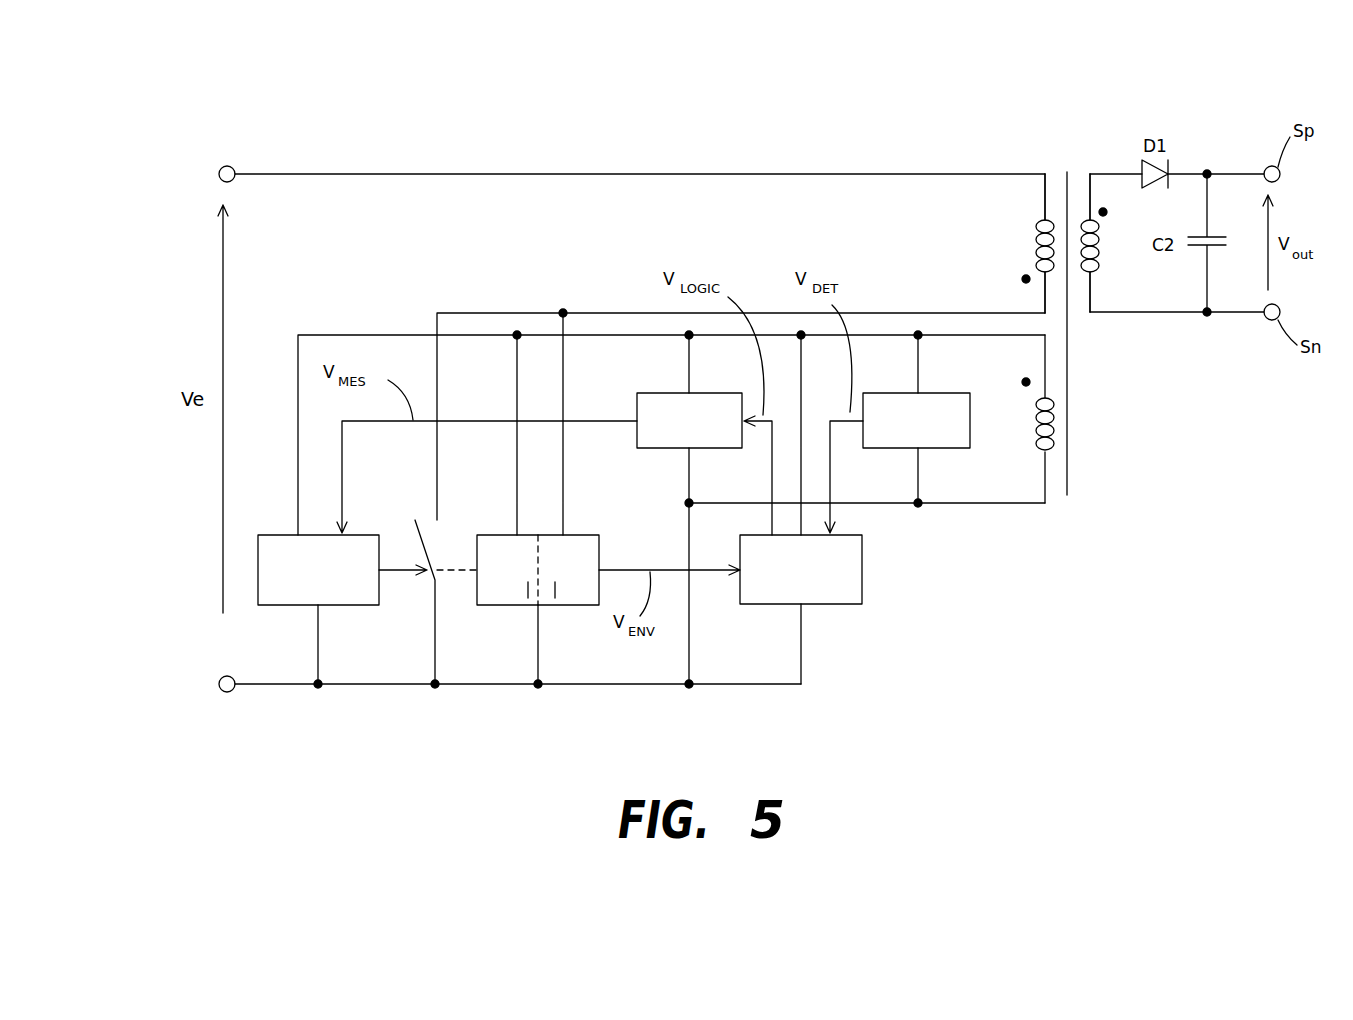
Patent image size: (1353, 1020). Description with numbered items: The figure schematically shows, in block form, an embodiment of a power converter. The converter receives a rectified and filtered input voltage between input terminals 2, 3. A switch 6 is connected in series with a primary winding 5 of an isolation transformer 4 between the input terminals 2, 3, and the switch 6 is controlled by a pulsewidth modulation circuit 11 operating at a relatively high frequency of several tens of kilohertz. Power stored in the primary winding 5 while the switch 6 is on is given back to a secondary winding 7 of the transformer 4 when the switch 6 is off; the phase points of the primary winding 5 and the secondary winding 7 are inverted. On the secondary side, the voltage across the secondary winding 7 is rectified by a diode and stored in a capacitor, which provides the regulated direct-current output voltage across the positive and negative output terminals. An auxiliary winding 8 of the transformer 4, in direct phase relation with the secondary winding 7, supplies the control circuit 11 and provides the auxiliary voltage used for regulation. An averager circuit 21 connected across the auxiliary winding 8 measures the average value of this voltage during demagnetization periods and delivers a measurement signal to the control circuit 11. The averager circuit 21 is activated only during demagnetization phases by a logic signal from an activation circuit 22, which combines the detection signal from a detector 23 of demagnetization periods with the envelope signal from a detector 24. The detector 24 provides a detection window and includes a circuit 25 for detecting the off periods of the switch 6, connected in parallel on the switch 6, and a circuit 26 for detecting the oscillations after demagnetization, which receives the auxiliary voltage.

The input terminal 2 is at (220, 167).
The input terminal 3 is at (220, 692).
The isolation transformer 4 is at (1064, 145).
The primary winding 5 is at (1035, 247).
The switch 6 is at (413, 528).
The secondary winding 7 is at (1100, 235).
The auxiliary winding 8 is at (1035, 432).
The pulsewidth modulation circuit 11 is at (285, 535).
The averager circuit 21 is at (650, 393).
The activation circuit 22 is at (862, 597).
The detector of demagnetization periods 23 is at (935, 393).
The detector 24 is at (584, 530).
The circuit for detecting off periods of the switch 25 is at (558, 598).
The circuit for detecting the oscillations after demagnetization 26 is at (528, 598).